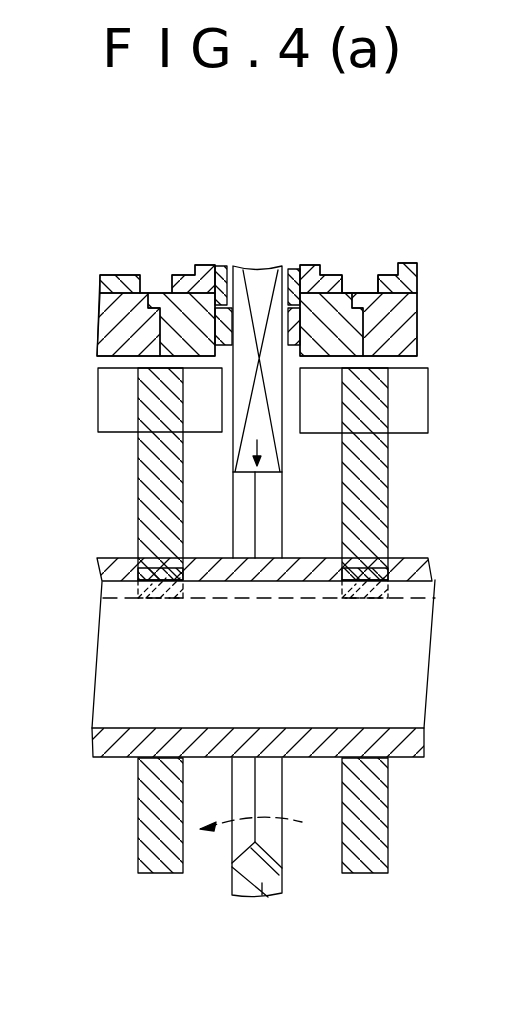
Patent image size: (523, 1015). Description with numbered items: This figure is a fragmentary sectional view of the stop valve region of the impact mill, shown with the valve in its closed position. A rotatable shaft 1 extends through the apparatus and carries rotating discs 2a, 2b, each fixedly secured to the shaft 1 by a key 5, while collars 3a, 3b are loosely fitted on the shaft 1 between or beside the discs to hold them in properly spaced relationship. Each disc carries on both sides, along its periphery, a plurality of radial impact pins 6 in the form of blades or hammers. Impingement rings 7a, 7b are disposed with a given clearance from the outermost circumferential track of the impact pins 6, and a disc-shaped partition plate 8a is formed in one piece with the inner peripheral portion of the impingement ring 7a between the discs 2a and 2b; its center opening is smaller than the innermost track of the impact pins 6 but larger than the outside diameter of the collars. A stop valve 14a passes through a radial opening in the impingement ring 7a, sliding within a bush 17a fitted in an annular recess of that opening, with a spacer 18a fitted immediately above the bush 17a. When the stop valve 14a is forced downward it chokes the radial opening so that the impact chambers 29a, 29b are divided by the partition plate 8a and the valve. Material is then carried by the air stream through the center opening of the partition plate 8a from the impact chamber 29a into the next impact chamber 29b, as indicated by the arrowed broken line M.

The rotatable shaft 1 is at (415, 665).
The collar 3a is at (422, 570).
The collar 3b is at (308, 567).
The key 5 is at (117, 565).
The impact pins 6 is at (112, 410).
The impingement ring 7a is at (343, 328).
The impingement ring 7b is at (105, 333).
The stop valve 14a is at (259, 283).
The bush 17a is at (346, 318).
The spacer 18a is at (293, 270).
The rotating disc 2a is at (375, 857).
The rotating disc 2b is at (160, 862).
The impact chamber 29a is at (323, 838).
The impact chamber 29b is at (205, 852).
The partition plate 8a is at (270, 883).
The arrowed broken line M is at (257, 806).